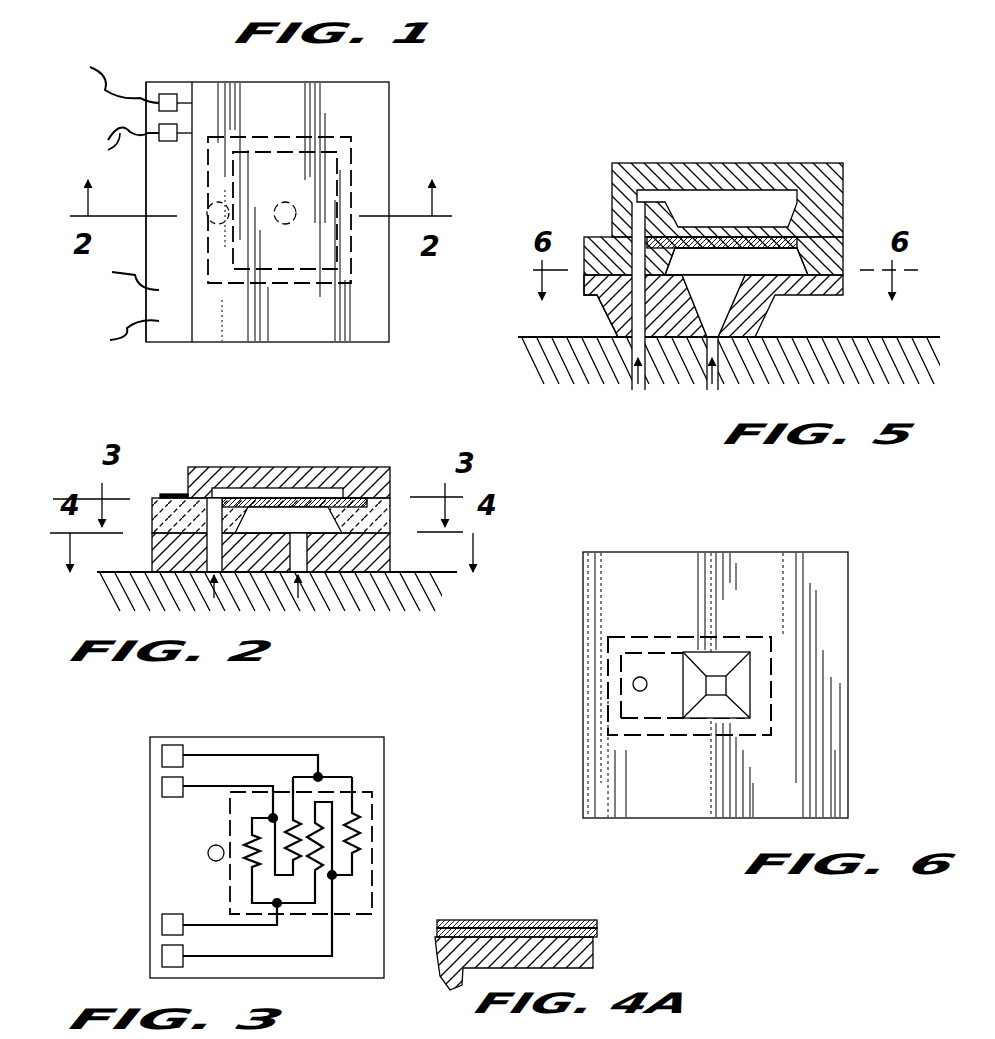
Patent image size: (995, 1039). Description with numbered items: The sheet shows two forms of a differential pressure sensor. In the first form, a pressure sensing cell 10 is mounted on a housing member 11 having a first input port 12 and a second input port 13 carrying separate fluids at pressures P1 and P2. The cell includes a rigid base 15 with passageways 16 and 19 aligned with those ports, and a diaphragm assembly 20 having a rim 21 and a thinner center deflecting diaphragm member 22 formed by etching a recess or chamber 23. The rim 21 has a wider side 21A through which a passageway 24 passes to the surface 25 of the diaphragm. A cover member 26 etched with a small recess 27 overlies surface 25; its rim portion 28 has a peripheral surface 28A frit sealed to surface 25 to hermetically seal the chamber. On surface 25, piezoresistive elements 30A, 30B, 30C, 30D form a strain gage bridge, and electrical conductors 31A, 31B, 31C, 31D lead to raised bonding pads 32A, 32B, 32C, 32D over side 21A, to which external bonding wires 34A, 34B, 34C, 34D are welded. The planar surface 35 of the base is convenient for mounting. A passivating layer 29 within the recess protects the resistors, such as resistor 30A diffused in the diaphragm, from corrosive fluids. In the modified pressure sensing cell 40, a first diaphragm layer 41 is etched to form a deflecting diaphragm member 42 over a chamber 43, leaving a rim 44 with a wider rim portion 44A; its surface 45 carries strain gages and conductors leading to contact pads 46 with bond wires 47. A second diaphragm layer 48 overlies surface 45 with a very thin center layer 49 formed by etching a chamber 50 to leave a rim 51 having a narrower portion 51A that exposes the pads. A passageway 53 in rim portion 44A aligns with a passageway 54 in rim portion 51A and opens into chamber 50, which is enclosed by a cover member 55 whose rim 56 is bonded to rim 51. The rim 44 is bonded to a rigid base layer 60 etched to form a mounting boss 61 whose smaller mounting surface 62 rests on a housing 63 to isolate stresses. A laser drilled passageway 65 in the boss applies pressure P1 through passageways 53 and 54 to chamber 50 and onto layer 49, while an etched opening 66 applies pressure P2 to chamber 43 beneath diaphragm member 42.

In FIG. 1, the pressure sensing cell 10 is at (395, 143).
In FIG. 2, the pressure sensing cell 10 is at (283, 526).
In FIG. 2, the housing member 11 is at (380, 557).
In FIG. 2, the first input port 12 is at (207, 550).
In FIG. 2, the second input port 13 is at (297, 553).
In FIG. 2, the base 15 is at (393, 572).
In FIG. 2, the passageway 16 is at (202, 563).
In FIG. 1, the passageway 19 is at (273, 225).
In FIG. 2, the passageway 19 is at (335, 577).
In FIG. 2, the diaphragm assembly 20 is at (160, 513).
In FIG. 2, the rim 21 is at (380, 522).
In FIG. 1, the side of rim 21A is at (158, 83).
In FIG. 2, the side of rim 21A is at (163, 528).
In FIG. 2, the deflecting diaphragm member 22 is at (253, 510).
In FIG. 4A, the deflecting diaphragm member 22 is at (575, 945).
In FIG. 1, the recess or chamber 23 is at (330, 137).
In FIG. 2, the recess or chamber 23 is at (308, 488).
In FIG. 3, the recess or chamber 23 is at (372, 867).
In FIG. 1, the passageway 24 is at (228, 200).
In FIG. 2, the passageway 24 is at (213, 505).
In FIG. 3, the passageway 24 is at (207, 852).
In FIG. 2, the surface of diaphragm 25 is at (330, 492).
In FIG. 3, the surface of diaphragm 25 is at (372, 752).
In FIG. 4A, the surface of diaphragm 25 is at (453, 920).
In FIG. 2, the cover member 26 is at (360, 470).
In FIG. 1, the recess or chamber 27 is at (257, 140).
In FIG. 2, the recess or chamber 27 is at (270, 492).
In FIG. 2, the rim portion 28 is at (390, 473).
In FIG. 2, the peripheral surface 28A is at (392, 500).
In FIG. 4A, the passivating layer 29 is at (530, 920).
In FIG. 3, the piezoresistive element 30A is at (360, 830).
In FIG. 4A, the piezoresistive element 30A is at (565, 928).
In FIG. 3, the piezoresistive element 30B is at (313, 835).
In FIG. 3, the piezoresistive element 30C is at (290, 827).
In FIG. 3, the piezoresistive element 30D is at (250, 858).
In FIG. 3, the electrical conductor 31A is at (235, 752).
In FIG. 3, the electrical conductor 31B is at (213, 790).
In FIG. 3, the electrical conductor 31C is at (217, 922).
In FIG. 3, the electrical conductor 31D is at (313, 957).
In FIG. 1, the bonding pad 32A is at (172, 90).
In FIG. 3, the bonding pad 32A is at (183, 745).
In FIG. 1, the bonding pad 32B is at (174, 143).
In FIG. 3, the bonding pad 32B is at (162, 787).
In FIG. 3, the bonding pad 32C is at (162, 924).
In FIG. 3, the bonding pad 32D is at (162, 956).
In FIG. 1, the external bonding wire 34A is at (109, 72).
In FIG. 1, the external bonding wire 34B is at (106, 145).
In FIG. 2, the external bonding wire 34B is at (167, 493).
In FIG. 1, the external bonding wire 34C is at (110, 275).
In FIG. 1, the external bonding wire 34D is at (111, 337).
In FIG. 2, the surface 35 is at (383, 557).
In FIG. 5, the pressure sensing cell 40 is at (722, 255).
In FIG. 5, the first diaphragm layer 41 is at (827, 257).
In FIG. 5, the deflecting diaphragm member 42 is at (743, 248).
In FIG. 5, the chamber 43 is at (686, 273).
In FIG. 5, the rim 44 is at (840, 283).
In FIG. 5, the wider rim portion 44A is at (590, 280).
In FIG. 5, the surface 45 is at (823, 190).
In FIG. 5, the contact pad 46 is at (605, 225).
In FIG. 5, the bond wire 47 is at (597, 237).
In FIG. 5, the second diaphragm layer 48 is at (657, 203).
In FIG. 5, the thin center layer 49 is at (693, 227).
In FIG. 5, the chamber 50 is at (763, 197).
In FIG. 5, the rim 51 is at (827, 233).
In FIG. 5, the rim portion 51A is at (613, 233).
In FIG. 5, the passageway 53 is at (642, 253).
In FIG. 5, the passageway 54 is at (641, 202).
In FIG. 5, the cover member 55 is at (738, 178).
In FIG. 5, the rim 56 is at (803, 198).
In FIG. 5, the base layer 60 is at (825, 292).
In FIG. 6, the base layer 60 is at (805, 562).
In FIG. 5, the mounting boss 61 is at (770, 330).
In FIG. 6, the mounting boss 61 is at (770, 655).
In FIG. 5, the mounting surface 62 is at (630, 343).
In FIG. 5, the housing 63 is at (867, 347).
In FIG. 5, the passageway 65 is at (640, 313).
In FIG. 6, the passageway 65 is at (645, 677).
In FIG. 5, the passageway 66 is at (720, 307).
In FIG. 6, the passageway 66 is at (722, 678).
In FIG. 5, the first pressure P1 is at (636, 388).
In FIG. 2, the first pressure P1 is at (214, 605).
In FIG. 5, the second pressure P2 is at (716, 388).
In FIG. 2, the second pressure P2 is at (298, 605).